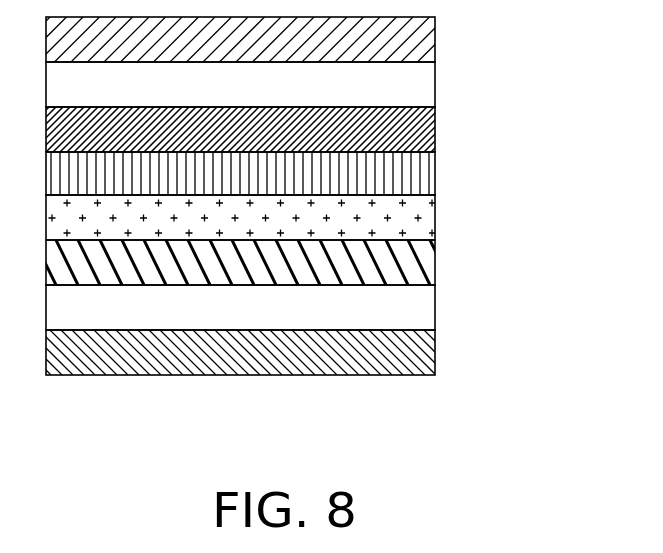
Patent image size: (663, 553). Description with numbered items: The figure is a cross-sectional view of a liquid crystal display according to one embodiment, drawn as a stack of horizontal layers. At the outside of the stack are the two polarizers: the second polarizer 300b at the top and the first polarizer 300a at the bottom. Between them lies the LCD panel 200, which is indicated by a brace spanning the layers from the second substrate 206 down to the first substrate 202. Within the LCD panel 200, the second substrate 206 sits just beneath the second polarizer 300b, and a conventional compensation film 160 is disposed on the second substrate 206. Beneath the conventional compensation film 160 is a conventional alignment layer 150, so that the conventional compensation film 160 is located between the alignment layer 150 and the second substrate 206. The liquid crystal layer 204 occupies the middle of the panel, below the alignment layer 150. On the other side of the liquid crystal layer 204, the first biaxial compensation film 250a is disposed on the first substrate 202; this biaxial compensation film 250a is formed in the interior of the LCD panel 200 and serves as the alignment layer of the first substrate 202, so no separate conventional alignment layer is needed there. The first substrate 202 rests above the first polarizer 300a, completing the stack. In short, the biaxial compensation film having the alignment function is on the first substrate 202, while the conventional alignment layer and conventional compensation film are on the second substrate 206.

The second polarizer 300b is at (430, 42).
The second substrate 206 is at (430, 87).
The conventional compensation film 160 is at (430, 132).
The alignment layer 150 is at (430, 175).
The liquid crystal layer 204 is at (430, 222).
The first biaxial compensation film 250a is at (430, 266).
The first substrate 202 is at (430, 308).
The first polarizer 300a is at (430, 355).
The LCD panel 200 is at (573, 60).